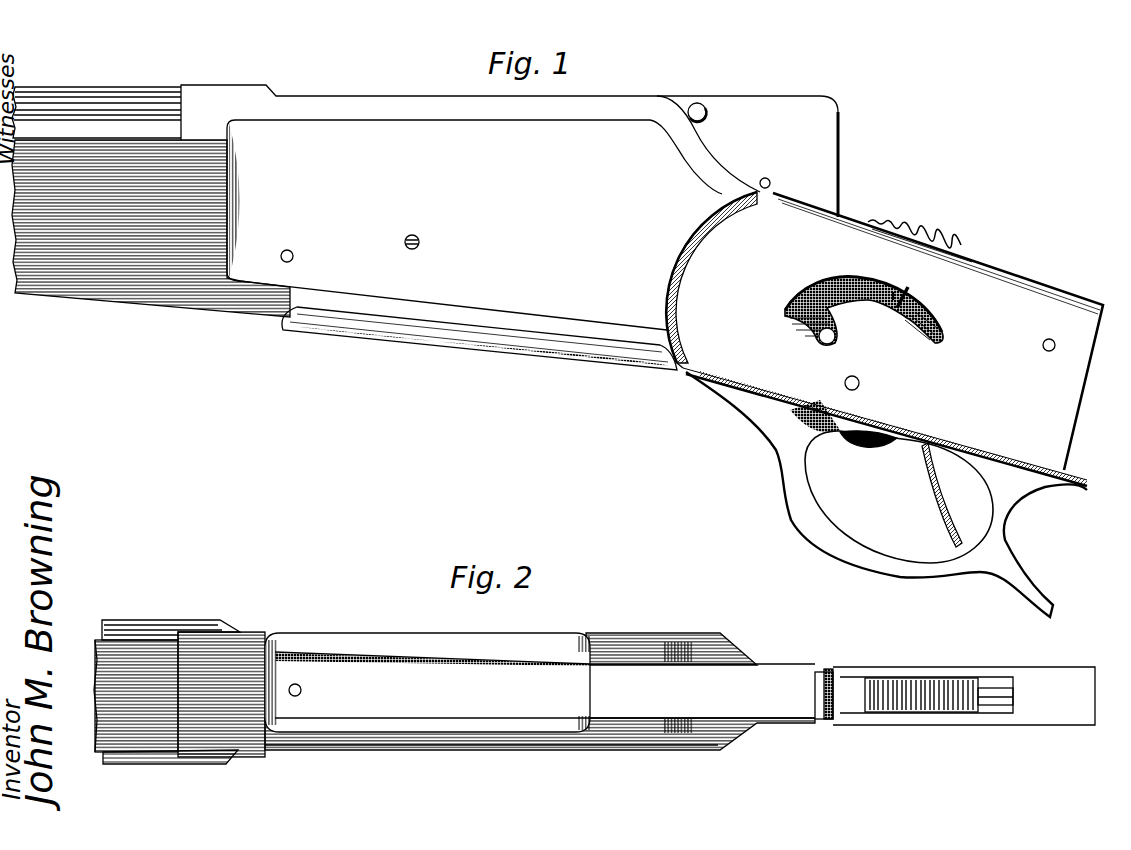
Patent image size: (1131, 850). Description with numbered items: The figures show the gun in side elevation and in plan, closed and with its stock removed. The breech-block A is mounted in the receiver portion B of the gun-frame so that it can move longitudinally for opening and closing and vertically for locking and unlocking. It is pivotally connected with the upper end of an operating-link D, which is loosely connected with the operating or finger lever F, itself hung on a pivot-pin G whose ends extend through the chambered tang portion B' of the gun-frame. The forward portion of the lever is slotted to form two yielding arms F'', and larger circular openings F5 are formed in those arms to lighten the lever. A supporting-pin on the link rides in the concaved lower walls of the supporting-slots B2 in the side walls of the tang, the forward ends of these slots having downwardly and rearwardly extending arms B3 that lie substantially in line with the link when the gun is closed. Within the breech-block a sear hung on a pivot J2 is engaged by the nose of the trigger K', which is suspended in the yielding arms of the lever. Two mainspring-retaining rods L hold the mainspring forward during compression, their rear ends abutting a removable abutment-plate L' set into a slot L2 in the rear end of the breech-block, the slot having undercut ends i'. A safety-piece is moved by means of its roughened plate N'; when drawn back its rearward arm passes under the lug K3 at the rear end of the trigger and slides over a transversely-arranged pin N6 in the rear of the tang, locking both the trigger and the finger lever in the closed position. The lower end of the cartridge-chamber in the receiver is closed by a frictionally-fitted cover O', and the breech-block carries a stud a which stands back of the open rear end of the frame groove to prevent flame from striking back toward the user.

In FIG. 1, the stud or projection a is at (701, 106).
In FIG. 2, the stud or projection a is at (690, 735).
In FIG. 1, the mainspring-retaining rod L is at (519, 151).
In FIG. 1, the receiver portion of the gun-frame B is at (474, 225).
In FIG. 2, the receiver portion of the gun-frame B is at (459, 705).
In FIG. 1, the sear pivot J2 is at (766, 178).
In FIG. 1, the safety-piece plate N' is at (920, 231).
In FIG. 2, the safety-piece plate N' is at (917, 674).
In FIG. 1, the circular opening F5 is at (893, 292).
In FIG. 1, the supporting-slot B2 is at (909, 288).
In FIG. 1, the yielding arm of the operating-lever F'' is at (833, 311).
In FIG. 1, the arm or extension of the supporting-slot B3 is at (836, 323).
In FIG. 1, the trigger K' is at (974, 337).
In FIG. 1, the chambered tang portion of the gun-frame B' is at (938, 331).
In FIG. 2, the chambered tang portion of the gun-frame B' is at (964, 696).
In FIG. 1, the transversely-arranged pin N6 is at (1054, 341).
In FIG. 1, the operating-lever pivot-pin G is at (859, 383).
In FIG. 1, the operating-link D is at (858, 446).
In FIG. 1, the operating or finger lever F is at (886, 494).
In FIG. 1, the cover O' is at (344, 255).
In FIG. 2, the breech-block A is at (540, 682).
In FIG. 2, the slot for the abutment-plate L2 is at (815, 695).
In FIG. 2, the abutment-plate L' is at (800, 733).
In FIG. 2, the undercut end of the slot i' is at (819, 695).
In FIG. 2, the lug at the rear end of the trigger K3 is at (997, 690).